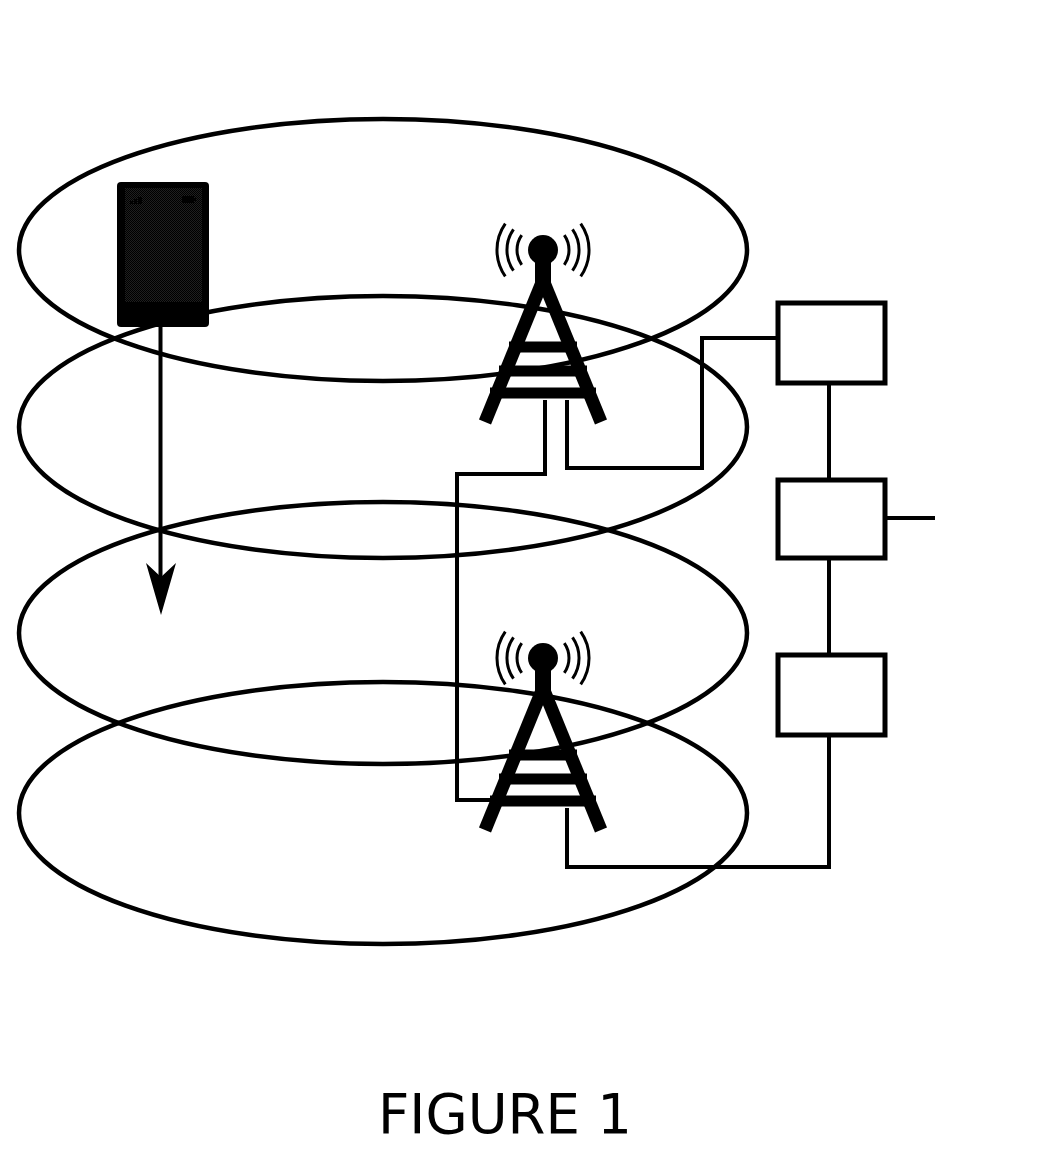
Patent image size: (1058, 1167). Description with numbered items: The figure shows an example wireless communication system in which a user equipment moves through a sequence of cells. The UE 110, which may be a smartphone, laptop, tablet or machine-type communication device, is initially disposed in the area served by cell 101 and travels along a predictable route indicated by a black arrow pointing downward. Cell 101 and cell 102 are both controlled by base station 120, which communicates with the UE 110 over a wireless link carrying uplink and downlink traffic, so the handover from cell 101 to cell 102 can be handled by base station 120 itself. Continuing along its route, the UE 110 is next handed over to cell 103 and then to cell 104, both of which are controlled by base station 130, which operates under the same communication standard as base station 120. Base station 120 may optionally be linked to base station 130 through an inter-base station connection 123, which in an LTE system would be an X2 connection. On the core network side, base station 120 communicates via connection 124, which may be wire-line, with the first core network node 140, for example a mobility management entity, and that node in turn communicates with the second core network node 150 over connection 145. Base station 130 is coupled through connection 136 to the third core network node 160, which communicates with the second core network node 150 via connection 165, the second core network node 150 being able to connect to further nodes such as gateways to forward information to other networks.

The cell 101 is at (398, 118).
The cell 102 is at (397, 296).
The cell 103 is at (396, 503).
The cell 104 is at (396, 683).
The UE 110 is at (166, 182).
The base station 120 is at (566, 320).
The inter-base station connection 123 is at (462, 806).
The connection 124 is at (735, 337).
The base station 130 is at (512, 810).
The connection 136 is at (757, 868).
The first core network node 140 is at (805, 358).
The connection 145 is at (829, 452).
The second core network node 150 is at (805, 532).
The third core network node 160 is at (805, 707).
The connection 165 is at (829, 632).